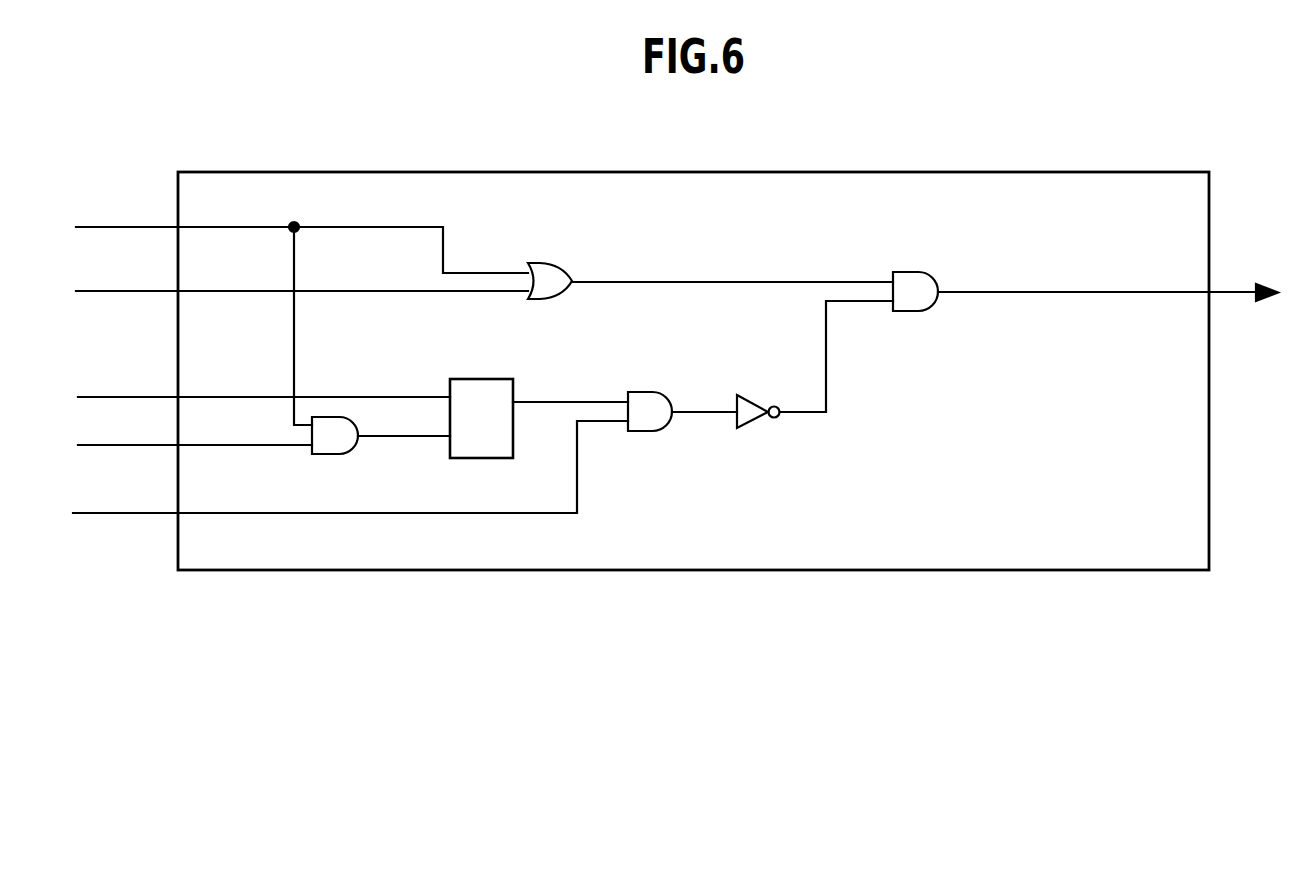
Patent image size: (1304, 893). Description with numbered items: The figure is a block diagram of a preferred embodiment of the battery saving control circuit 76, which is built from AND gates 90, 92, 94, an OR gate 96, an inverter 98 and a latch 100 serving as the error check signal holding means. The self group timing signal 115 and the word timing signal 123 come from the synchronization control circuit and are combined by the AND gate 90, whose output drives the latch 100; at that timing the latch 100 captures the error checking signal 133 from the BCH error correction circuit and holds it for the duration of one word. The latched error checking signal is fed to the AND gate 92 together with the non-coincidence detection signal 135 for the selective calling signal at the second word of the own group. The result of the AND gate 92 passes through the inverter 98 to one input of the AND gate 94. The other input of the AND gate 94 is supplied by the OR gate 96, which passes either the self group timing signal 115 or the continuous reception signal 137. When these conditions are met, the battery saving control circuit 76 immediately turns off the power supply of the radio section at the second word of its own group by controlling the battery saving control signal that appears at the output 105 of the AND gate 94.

The battery saving control circuit 76 is at (290, 172).
The self group timing signal 115 is at (131, 226).
The continuous reception signal 137 is at (136, 265).
The error checking signal 133 is at (144, 370).
The word timing signal 123 is at (144, 418).
The non-coincidence detection signal 135 is at (95, 512).
The AND gate 90 is at (335, 454).
The latch 100 is at (487, 353).
The AND gate 92 is at (650, 431).
The inverter 98 is at (755, 428).
The OR gate 96 is at (566, 263).
The AND gate 94 is at (920, 311).
The output signal 105 is at (1268, 254).